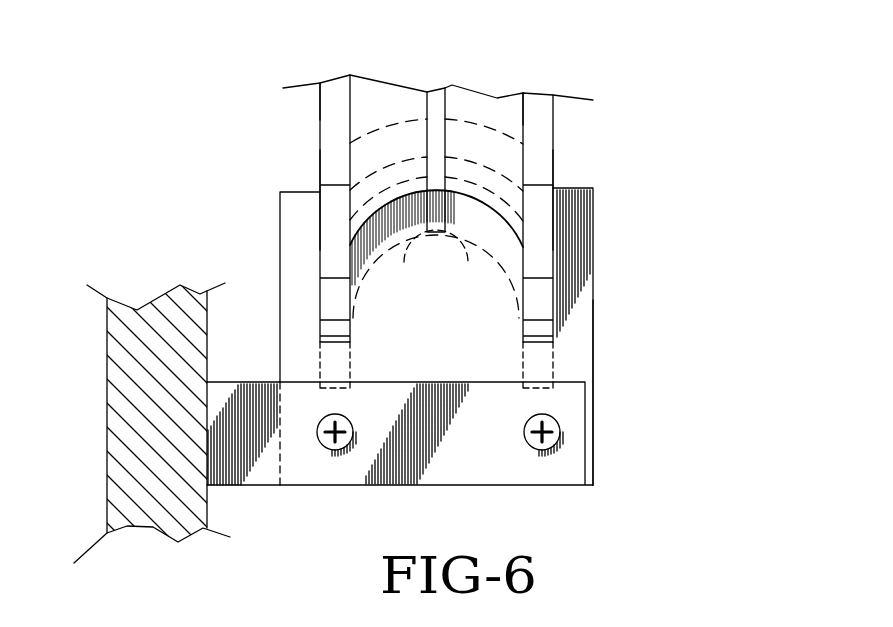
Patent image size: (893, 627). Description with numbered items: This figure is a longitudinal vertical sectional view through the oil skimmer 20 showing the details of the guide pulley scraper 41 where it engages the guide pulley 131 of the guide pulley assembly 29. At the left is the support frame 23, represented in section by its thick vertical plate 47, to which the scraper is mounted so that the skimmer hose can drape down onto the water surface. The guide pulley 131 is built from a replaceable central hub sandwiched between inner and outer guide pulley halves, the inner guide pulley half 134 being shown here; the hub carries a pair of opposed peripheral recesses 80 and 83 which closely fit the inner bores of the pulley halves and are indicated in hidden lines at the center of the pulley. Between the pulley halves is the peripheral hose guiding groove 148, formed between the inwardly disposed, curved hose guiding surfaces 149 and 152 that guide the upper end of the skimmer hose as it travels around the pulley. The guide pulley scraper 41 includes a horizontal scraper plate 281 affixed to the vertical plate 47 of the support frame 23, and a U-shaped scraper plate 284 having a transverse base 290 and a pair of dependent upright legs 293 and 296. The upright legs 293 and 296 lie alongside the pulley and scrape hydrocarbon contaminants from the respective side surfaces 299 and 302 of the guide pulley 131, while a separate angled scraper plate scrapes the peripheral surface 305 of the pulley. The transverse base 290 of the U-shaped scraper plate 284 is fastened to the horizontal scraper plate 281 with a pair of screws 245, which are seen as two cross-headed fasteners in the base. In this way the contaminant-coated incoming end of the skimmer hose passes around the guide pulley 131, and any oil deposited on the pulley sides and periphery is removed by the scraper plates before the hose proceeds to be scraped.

The oil skimmer 20 is at (742, 130).
The support frame 23 is at (105, 365).
The guide pulley assembly 29 is at (575, 118).
The guide pulley scraper 41 is at (615, 282).
The vertical plate 47 is at (107, 435).
The peripheral recess 80 is at (411, 245).
The peripheral recess 83 is at (470, 242).
The guide pulley 131 is at (558, 143).
The inner guide pulley half 134 is at (318, 147).
The peripheral hose guiding groove 148 is at (393, 106).
The hose guiding surface 149 is at (352, 281).
The hose guiding surface 152 is at (521, 307).
The screws 245 is at (332, 448).
The horizontal scraper plate 281 is at (281, 478).
The U-shaped scraper plate 284 is at (595, 420).
The transverse base 290 is at (430, 487).
The upright leg 293 is at (595, 212).
The upright leg 296 is at (280, 221).
The side surface 299 is at (320, 175).
The side surface 302 is at (555, 165).
The peripheral surface 305 is at (332, 112).